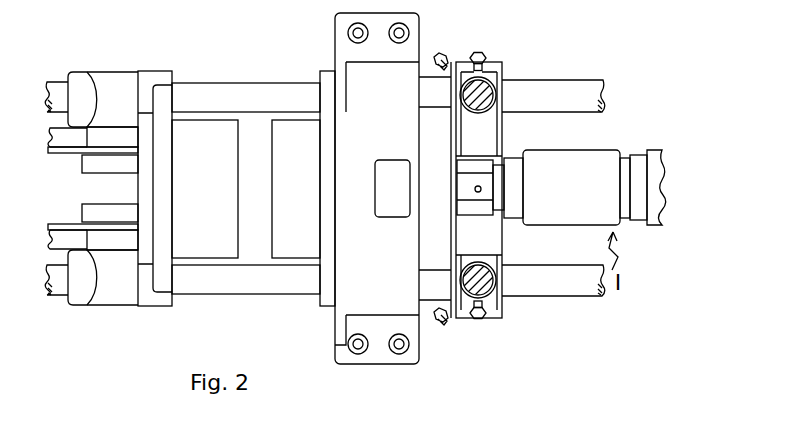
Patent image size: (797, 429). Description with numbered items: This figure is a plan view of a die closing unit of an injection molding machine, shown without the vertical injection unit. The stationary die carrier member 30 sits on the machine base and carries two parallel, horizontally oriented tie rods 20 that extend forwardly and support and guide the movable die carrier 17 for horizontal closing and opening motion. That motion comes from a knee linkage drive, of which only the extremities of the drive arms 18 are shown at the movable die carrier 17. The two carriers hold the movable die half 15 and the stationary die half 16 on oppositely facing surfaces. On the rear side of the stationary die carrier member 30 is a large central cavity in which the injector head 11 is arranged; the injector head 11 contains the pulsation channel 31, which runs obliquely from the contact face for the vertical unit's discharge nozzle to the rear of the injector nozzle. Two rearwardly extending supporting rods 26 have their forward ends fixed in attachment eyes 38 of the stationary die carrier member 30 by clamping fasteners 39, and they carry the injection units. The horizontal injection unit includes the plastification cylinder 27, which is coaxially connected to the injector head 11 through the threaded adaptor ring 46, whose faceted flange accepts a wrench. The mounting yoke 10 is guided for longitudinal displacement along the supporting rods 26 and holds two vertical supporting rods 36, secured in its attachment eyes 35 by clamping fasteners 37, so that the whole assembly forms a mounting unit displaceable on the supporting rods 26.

The mounting yoke 10 is at (492, 142).
The injector head 11 is at (488, 193).
The movable die half 15 is at (193, 137).
The stationary die half 16 is at (287, 137).
The movable die carrier 17 is at (145, 82).
The drive arms 18 is at (63, 135).
The tie rods 20 is at (60, 92).
The supporting rods 26 is at (547, 92).
The plastification cylinder 27 is at (626, 212).
The stationary die carrier member 30 is at (360, 323).
The pulsation channel 31 is at (475, 189).
The attachment eyes 35 is at (498, 112).
The vertical supporting rods 36 is at (458, 300).
The clamping fasteners 37 is at (477, 318).
The attachment eyes 38 is at (445, 85).
The clamping fasteners 39 is at (438, 55).
The threaded adaptor ring 46 is at (497, 202).